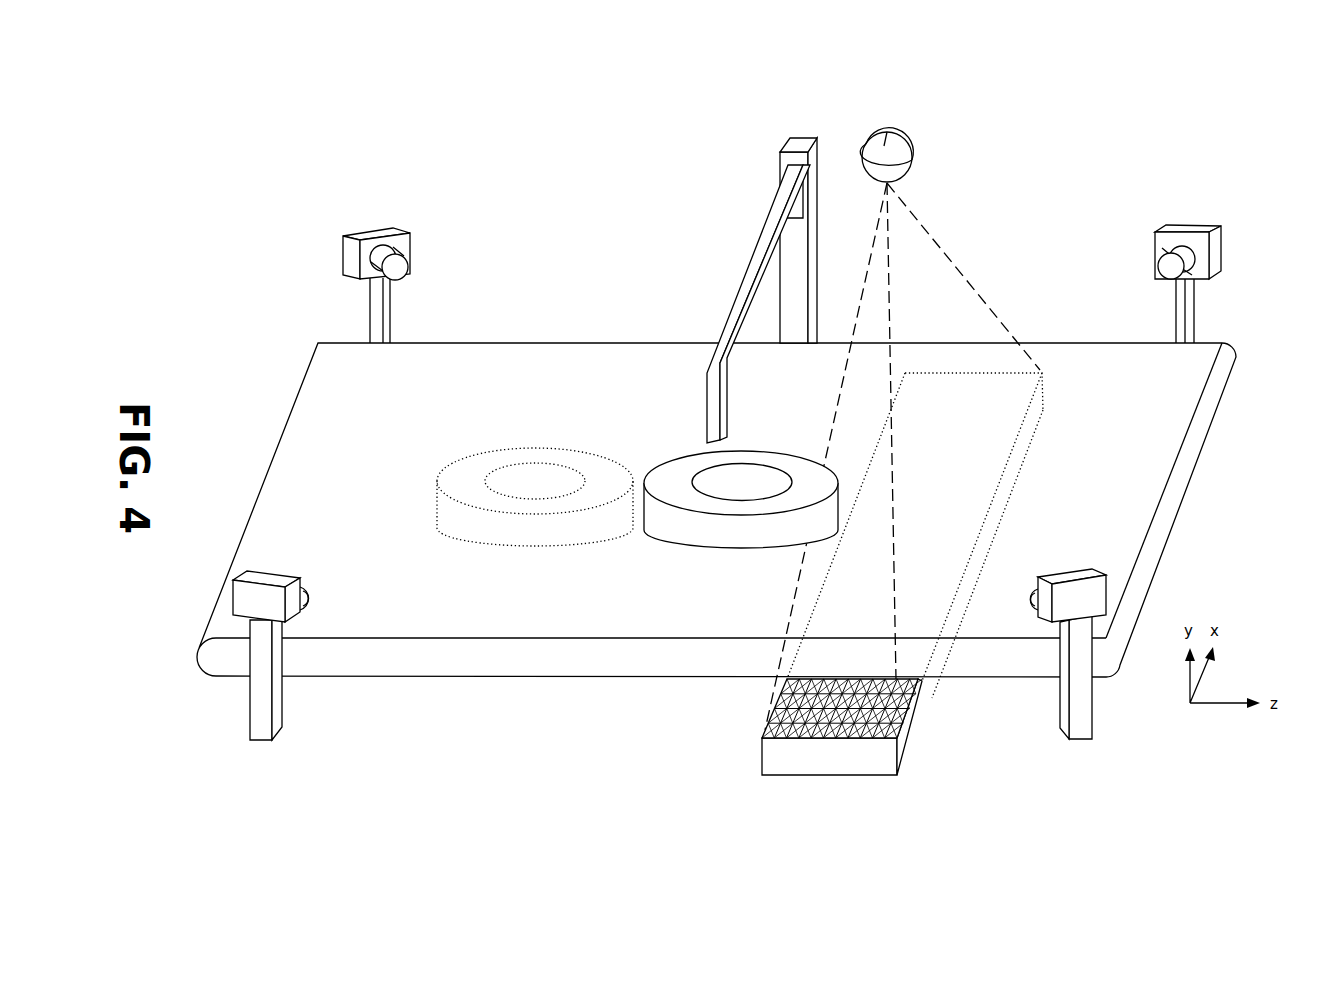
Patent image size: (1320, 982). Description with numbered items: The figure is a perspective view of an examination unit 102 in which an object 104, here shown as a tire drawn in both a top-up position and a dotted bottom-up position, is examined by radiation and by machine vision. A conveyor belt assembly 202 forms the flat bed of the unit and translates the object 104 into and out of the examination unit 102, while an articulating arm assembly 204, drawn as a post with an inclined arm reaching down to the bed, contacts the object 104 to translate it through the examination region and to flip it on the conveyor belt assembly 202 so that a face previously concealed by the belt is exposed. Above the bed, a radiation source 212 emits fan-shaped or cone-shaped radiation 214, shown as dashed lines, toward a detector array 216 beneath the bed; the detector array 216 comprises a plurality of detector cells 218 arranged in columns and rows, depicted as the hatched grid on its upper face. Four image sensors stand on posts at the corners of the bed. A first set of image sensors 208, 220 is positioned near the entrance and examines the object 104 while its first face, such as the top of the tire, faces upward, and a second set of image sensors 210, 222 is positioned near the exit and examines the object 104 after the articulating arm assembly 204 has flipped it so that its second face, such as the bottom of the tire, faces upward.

The examination unit 102 is at (1210, 120).
The object 104 is at (590, 452).
The conveyor belt assembly 202 is at (1118, 396).
The articulating arm assembly 204 is at (798, 148).
The image sensor 208 is at (1193, 230).
The image sensor 210 is at (377, 235).
The radiation source 212 is at (910, 130).
The radiation 214 is at (930, 237).
The detector array 216 is at (790, 710).
The detector cells 218 is at (826, 685).
The image sensor 220 is at (1082, 577).
The image sensor 222 is at (262, 578).